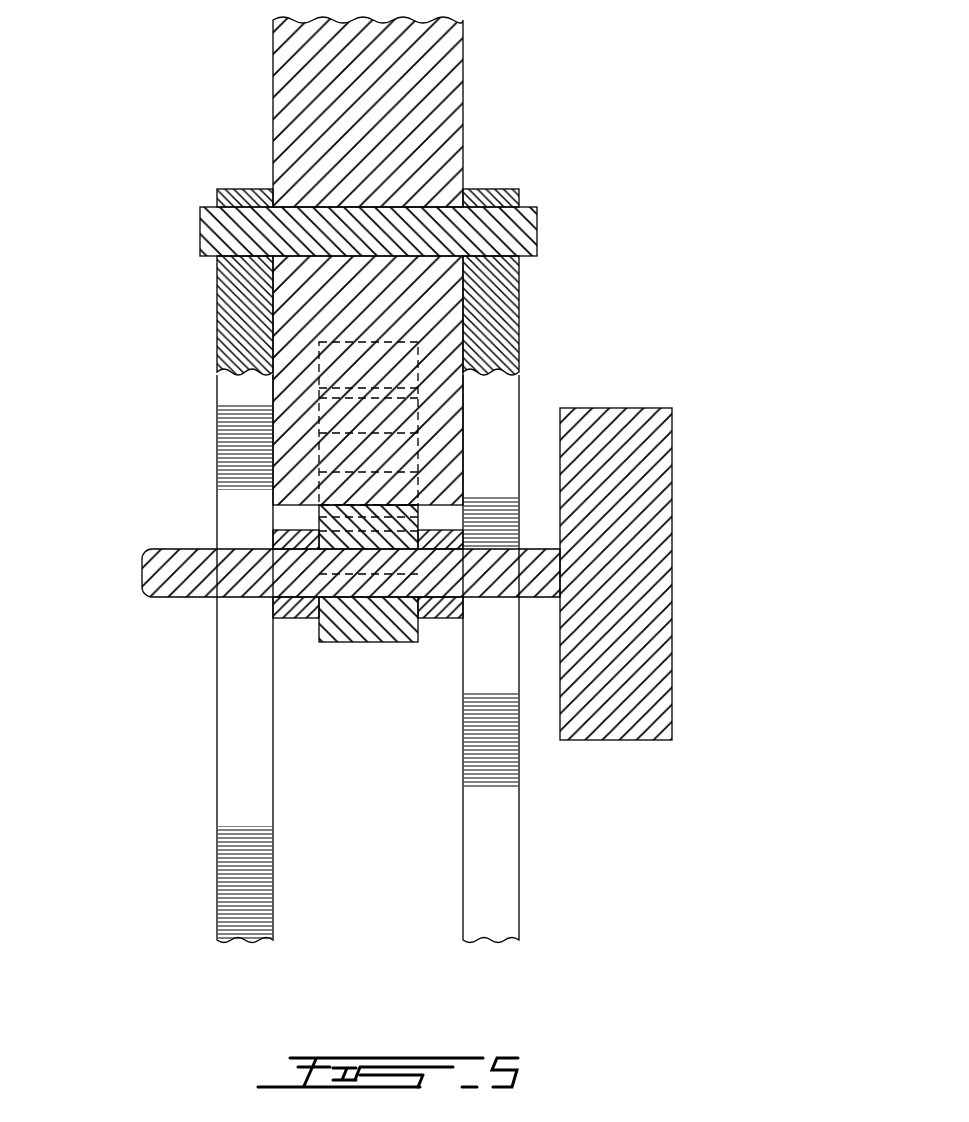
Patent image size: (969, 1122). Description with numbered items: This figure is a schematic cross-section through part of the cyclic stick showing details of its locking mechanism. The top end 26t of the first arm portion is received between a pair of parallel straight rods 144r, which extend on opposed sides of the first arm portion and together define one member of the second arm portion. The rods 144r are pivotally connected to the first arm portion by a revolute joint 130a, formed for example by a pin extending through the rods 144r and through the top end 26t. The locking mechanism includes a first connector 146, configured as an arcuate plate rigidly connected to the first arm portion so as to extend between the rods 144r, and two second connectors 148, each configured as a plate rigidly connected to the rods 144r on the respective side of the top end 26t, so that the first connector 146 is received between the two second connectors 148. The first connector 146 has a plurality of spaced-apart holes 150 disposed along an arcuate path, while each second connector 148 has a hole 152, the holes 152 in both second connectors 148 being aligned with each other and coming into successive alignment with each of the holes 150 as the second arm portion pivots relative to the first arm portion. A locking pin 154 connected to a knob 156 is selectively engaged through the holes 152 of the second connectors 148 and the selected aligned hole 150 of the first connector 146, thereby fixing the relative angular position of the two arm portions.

The top end 26t is at (393, 85).
The revolute joint 130a is at (503, 230).
The straight rods 144r is at (252, 868).
The first connector 146 is at (390, 643).
The second connector 148 is at (441, 540).
The holes 150 is at (367, 383).
The hole 152 is at (282, 605).
The locking pin 154 is at (172, 572).
The knob 156 is at (623, 512).